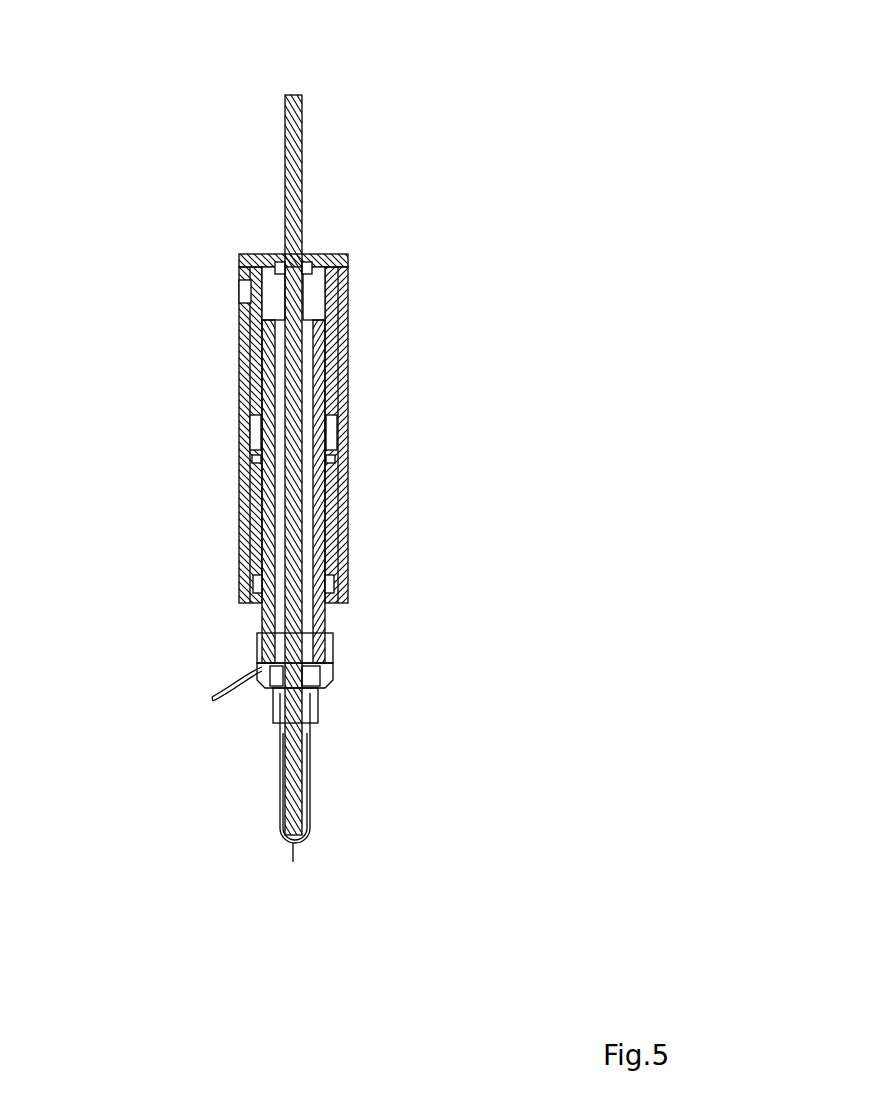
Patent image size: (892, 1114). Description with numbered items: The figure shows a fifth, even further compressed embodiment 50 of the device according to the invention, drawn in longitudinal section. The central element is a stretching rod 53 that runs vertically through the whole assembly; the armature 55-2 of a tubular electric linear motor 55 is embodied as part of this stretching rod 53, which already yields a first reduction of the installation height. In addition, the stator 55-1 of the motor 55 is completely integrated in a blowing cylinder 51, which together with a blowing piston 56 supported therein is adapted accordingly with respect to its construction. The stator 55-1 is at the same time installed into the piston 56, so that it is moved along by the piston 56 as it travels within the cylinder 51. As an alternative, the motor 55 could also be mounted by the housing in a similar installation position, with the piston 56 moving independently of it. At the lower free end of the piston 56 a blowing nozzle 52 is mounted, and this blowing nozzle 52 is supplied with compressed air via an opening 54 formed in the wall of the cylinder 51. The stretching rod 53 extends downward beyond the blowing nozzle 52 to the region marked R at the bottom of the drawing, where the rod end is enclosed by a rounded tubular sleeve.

The fifth embodiment 50 is at (495, 127).
The blowing cylinder 51 is at (330, 535).
The blowing nozzle 52 is at (262, 673).
The stretching rod 53 is at (290, 373).
The opening 54 is at (245, 287).
The tubular electric linear motor 55 is at (181, 363).
The stator 55-1 is at (276, 487).
The armature 55-2 is at (293, 465).
The piston 56 is at (265, 574).
The probe tip R is at (310, 822).